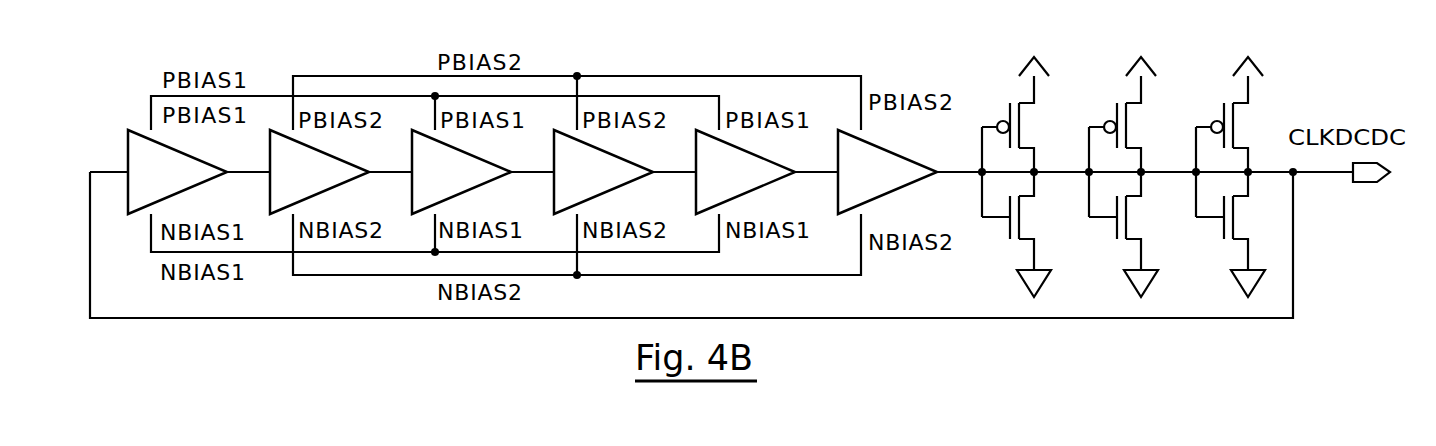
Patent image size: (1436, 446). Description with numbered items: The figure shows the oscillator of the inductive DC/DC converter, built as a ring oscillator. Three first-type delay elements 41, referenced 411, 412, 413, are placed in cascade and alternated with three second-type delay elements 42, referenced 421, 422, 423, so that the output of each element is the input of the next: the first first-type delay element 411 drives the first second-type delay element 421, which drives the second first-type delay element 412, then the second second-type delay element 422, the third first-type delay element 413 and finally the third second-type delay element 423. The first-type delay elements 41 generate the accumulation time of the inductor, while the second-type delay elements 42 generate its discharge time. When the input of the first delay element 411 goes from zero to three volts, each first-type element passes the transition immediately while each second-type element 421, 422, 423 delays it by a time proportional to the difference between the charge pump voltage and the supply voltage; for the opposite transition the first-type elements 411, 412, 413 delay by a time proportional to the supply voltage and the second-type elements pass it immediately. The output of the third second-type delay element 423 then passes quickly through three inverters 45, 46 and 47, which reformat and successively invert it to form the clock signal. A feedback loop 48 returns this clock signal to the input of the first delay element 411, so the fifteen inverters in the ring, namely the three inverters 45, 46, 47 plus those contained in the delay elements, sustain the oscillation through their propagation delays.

The delay element DEL1 41 is at (451, 121).
The first delay element DEL1 411 is at (144, 138).
The second delay element DEL1 412 is at (425, 137).
The third delay element DEL1 413 is at (711, 137).
The delay element DEL2 42 is at (591, 121).
The first delay element DEL2 421 is at (283, 138).
The second delay element DEL2 422 is at (565, 137).
The third delay element DEL2 423 is at (853, 135).
The inverter 45 is at (1000, 233).
The inverter 46 is at (1107, 233).
The inverter 47 is at (1214, 233).
The feedback loop 48 is at (1293, 286).